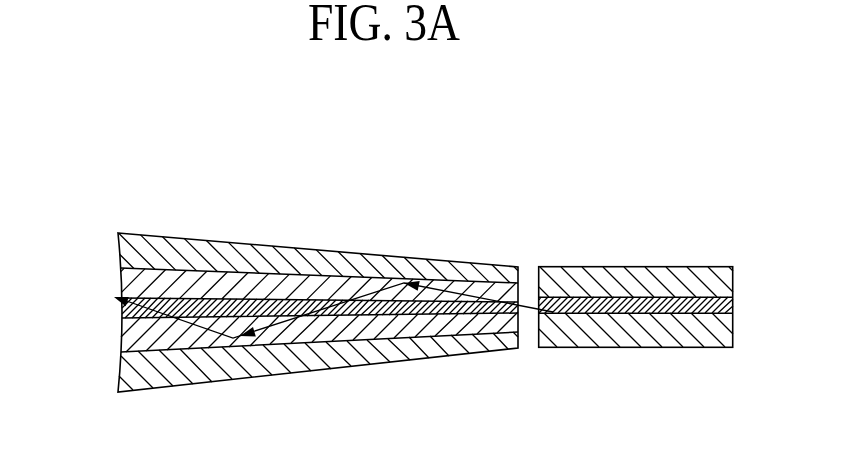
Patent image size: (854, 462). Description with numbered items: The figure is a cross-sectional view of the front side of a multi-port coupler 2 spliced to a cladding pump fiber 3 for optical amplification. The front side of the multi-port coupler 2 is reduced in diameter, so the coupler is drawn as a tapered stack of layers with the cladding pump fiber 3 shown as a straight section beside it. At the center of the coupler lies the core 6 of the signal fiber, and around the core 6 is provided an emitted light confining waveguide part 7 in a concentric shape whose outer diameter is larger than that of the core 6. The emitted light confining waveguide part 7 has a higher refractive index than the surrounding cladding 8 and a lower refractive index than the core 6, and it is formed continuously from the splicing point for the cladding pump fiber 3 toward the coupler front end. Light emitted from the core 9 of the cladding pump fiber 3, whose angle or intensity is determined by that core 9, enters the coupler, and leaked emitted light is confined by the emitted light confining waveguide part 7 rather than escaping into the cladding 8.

The multi-port coupler 2 is at (292, 298).
The cladding pump fiber 3 is at (680, 271).
The core 6 is at (123, 308).
The emitted light confining waveguide part 7 is at (133, 287).
The cladding 8 is at (116, 252).
The core of the cladding pump fiber 9 is at (553, 312).